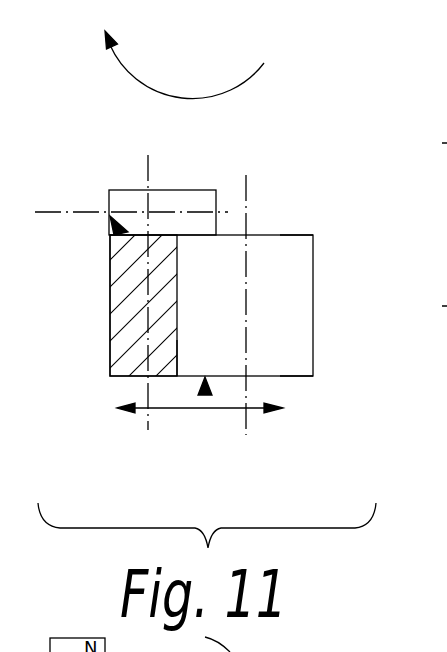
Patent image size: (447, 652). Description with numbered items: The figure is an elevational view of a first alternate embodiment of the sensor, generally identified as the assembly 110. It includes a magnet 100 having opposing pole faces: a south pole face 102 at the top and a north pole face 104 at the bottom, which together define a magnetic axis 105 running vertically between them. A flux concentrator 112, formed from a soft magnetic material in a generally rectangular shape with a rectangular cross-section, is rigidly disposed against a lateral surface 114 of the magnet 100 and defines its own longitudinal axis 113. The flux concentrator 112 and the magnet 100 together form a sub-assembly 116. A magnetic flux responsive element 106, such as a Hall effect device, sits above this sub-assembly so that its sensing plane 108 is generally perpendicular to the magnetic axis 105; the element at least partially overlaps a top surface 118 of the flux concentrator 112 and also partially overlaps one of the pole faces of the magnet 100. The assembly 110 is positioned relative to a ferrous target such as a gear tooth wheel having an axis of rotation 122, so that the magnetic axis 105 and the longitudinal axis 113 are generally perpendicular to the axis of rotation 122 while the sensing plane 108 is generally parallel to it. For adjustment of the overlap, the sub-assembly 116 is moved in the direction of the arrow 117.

The magnet 100 is at (313, 308).
The south pole face 102 is at (280, 234).
The north pole face 104 is at (303, 377).
The magnetic axis 105 is at (246, 432).
The magnetic flux responsive element 106 is at (183, 197).
The sensing plane 108 is at (45, 214).
The assembly 110 is at (278, 158).
The flux concentrator 112 is at (110, 336).
The longitudinal axis 113 is at (145, 157).
The lateral surface 114 is at (177, 360).
The sub-assembly 116 is at (205, 395).
The arrow 117 is at (140, 413).
The top surface 118 is at (109, 218).
The axis of rotation 122 is at (193, 10).